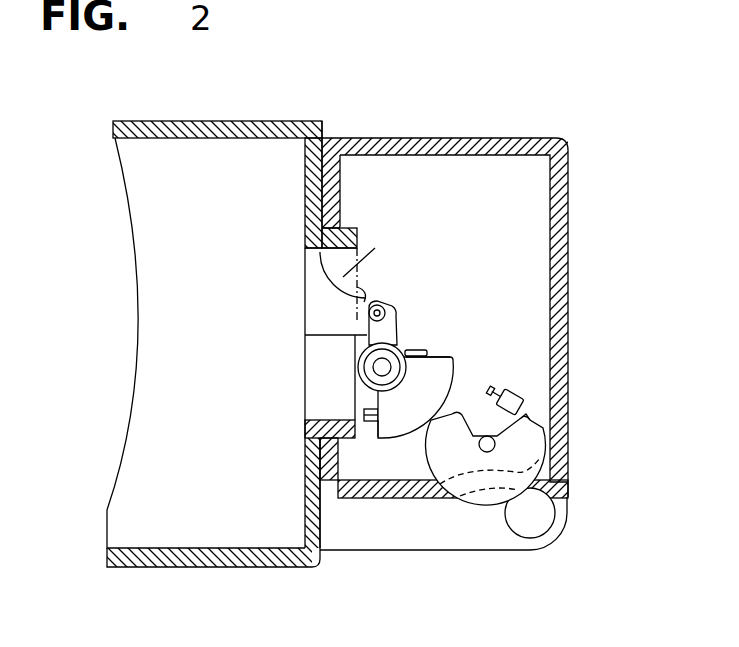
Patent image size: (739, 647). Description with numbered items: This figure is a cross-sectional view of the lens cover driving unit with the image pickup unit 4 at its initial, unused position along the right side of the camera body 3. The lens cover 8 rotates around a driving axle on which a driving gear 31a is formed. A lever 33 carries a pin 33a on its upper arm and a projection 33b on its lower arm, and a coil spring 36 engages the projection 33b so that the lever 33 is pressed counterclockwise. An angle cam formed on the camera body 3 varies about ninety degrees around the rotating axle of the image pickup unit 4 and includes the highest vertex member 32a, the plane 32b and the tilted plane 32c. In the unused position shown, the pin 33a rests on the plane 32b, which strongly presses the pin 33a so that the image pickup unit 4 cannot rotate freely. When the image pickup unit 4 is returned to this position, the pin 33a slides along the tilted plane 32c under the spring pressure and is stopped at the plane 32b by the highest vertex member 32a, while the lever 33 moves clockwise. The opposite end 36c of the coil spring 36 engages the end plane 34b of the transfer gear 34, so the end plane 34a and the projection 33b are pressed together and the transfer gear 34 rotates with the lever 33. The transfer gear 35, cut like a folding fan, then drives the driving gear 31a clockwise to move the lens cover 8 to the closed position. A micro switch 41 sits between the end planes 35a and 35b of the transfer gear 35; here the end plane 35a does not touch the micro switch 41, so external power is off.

The camera body 3 is at (200, 121).
The image pickup unit 4 is at (434, 139).
The lens cover 8 is at (365, 550).
The driving gear 31a is at (556, 521).
The highest vertex member 32a is at (398, 312).
The plane 32b is at (357, 290).
The tilted plane 32c is at (341, 243).
The lever 33 is at (399, 315).
The pin 33a is at (385, 298).
The projection 33b is at (366, 416).
The transfer gear 34 is at (455, 382).
The end plane 34a is at (372, 426).
The end plane 34b is at (440, 352).
The transfer gear 35 is at (484, 504).
The end plane 35a is at (490, 472).
The end plane 35b is at (527, 418).
The coil spring 36 is at (343, 467).
The opposite end of the coil spring 36c is at (422, 347).
The micro switch 41 is at (522, 396).